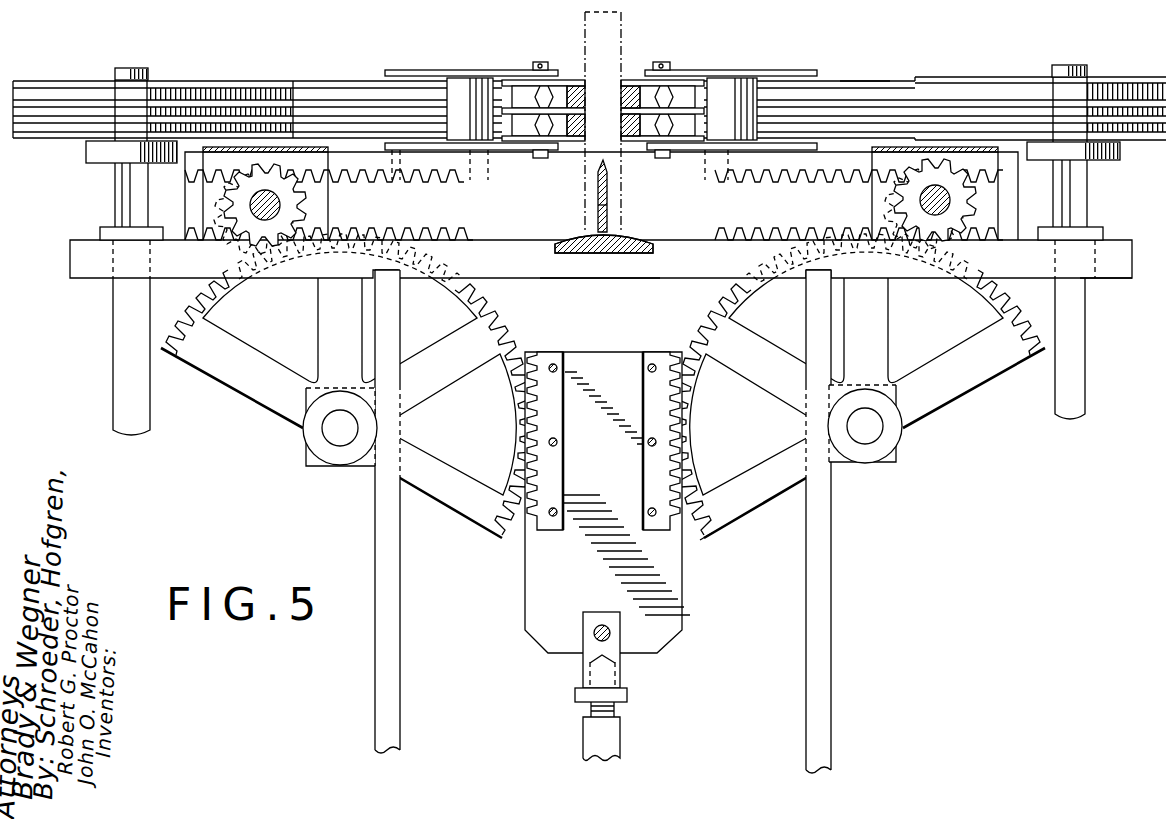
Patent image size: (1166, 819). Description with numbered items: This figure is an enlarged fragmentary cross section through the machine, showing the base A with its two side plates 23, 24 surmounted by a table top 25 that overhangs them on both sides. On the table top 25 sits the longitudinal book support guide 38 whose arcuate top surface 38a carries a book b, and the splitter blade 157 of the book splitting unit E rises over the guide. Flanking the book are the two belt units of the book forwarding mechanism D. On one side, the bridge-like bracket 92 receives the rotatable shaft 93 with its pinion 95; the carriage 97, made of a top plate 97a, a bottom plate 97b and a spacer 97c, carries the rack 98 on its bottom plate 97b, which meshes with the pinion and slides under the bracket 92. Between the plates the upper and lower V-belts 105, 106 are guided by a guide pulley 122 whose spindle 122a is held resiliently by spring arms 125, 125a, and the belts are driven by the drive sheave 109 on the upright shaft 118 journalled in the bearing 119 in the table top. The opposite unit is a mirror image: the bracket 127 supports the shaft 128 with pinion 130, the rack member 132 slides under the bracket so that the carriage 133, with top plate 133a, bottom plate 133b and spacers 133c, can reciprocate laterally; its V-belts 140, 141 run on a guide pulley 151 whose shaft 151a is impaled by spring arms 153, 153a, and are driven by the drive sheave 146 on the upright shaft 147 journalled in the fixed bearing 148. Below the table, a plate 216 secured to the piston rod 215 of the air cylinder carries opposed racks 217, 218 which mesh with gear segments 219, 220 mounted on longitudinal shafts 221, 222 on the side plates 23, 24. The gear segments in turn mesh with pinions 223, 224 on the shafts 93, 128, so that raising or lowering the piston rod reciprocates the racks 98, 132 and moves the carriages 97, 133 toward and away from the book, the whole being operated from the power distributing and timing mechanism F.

The side plate 23 is at (375, 520).
The side plate 24 is at (832, 590).
The table top 25 is at (100, 268).
The book support guide 38 is at (645, 253).
The arcuate top surface 38a is at (590, 231).
The bridge-like bracket 92 is at (212, 202).
The rotatable shaft 93 is at (300, 203).
The pinion 95 is at (285, 212).
The carriage 97 is at (460, 105).
The top plate 97a is at (440, 70).
The bottom plate 97b is at (471, 174).
The spacer 97c is at (462, 85).
The rack 98 is at (329, 205).
The upper V-belt 105 is at (285, 82).
The lower V-belt 106 is at (603, 119).
The drive sheave 109 is at (190, 80).
The upright shaft 118 is at (125, 68).
The bearing 119 is at (100, 227).
The guide pulley 122 is at (568, 82).
The pulley spindle 122a is at (553, 62).
The pulley supporting spring arm 125 is at (540, 66).
The pulley supporting spring arm 125a is at (540, 158).
The bridge-like bracket 127 is at (880, 196).
The longitudinal shaft 128 is at (985, 205).
The pinion 130 is at (905, 205).
The rack member 132 is at (859, 205).
The carriage 133 is at (741, 108).
The top plate 133a is at (795, 70).
The bottom plate 133b is at (700, 152).
The spacer 133c is at (730, 80).
The V-belt 140 is at (622, 85).
The V-belt 141 is at (850, 122).
The drive sheave 146 is at (1120, 80).
The upright shaft 147 is at (1065, 66).
The fixed bearing 148 is at (1100, 227).
The guide pulley 151 is at (633, 148).
The pulley shaft 151a is at (662, 62).
The spring arm 153 is at (668, 66).
The spring arm 153a is at (670, 158).
The splitter blade 157 is at (600, 196).
The piston rod 215 is at (620, 730).
The plate 216 is at (525, 605).
The rack 217 is at (553, 352).
The rack 218 is at (650, 352).
The gear segment 219 is at (465, 385).
The gear segment 220 is at (760, 380).
The longitudinal shaft 221 is at (330, 428).
The longitudinal shaft 222 is at (875, 428).
The pinion 223 is at (312, 258).
The pinion 224 is at (887, 258).
The base A is at (1110, 278).
The book forwarding mechanism D is at (863, 76).
The book splitting unit E is at (615, 220).
The power distributing and timing mechanism F is at (700, 552).
The book b is at (609, 16).